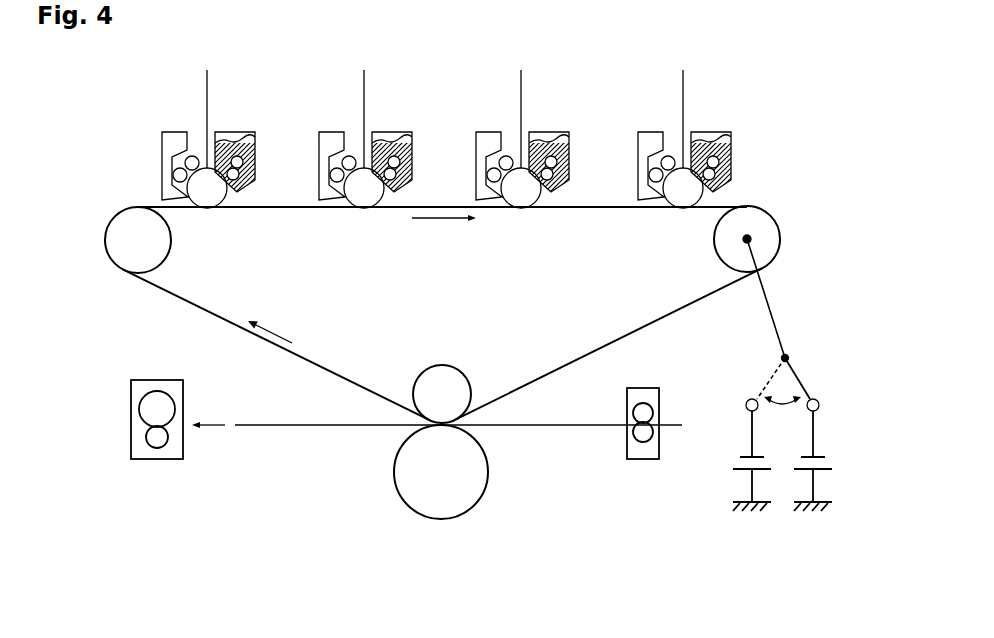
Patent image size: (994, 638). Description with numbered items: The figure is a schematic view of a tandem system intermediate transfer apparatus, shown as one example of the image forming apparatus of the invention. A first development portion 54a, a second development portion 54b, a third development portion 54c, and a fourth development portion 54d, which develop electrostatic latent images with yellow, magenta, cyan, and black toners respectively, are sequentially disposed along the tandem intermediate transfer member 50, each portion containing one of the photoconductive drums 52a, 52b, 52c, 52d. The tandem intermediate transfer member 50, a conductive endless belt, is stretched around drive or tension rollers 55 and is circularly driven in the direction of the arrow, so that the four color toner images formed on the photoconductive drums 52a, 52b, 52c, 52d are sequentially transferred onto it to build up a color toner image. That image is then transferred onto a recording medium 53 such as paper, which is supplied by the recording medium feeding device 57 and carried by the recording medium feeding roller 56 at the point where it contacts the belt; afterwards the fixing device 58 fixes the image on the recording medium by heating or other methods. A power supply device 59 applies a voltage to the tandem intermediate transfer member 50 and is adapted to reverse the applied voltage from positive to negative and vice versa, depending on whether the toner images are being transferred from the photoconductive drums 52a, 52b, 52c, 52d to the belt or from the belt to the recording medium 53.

The tandem intermediate transfer member 50 is at (197, 308).
The photoconductive drum 52a is at (198, 195).
The photoconductive drum 52b is at (321, 139).
The photoconductive drum 52c is at (479, 139).
The photoconductive drum 52d is at (640, 139).
The recording medium 53 is at (563, 425).
The first development portion 54a is at (238, 122).
The second development portion 54b is at (392, 129).
The third development portion 54c is at (549, 129).
The fourth development portion 54d is at (711, 129).
The drive roller or tension roller 55 is at (125, 240).
The recording medium feeding roller 56 is at (442, 495).
The recording medium feeding device 57 is at (643, 460).
The fixing device 58 is at (157, 460).
The power supply device 59 is at (804, 371).